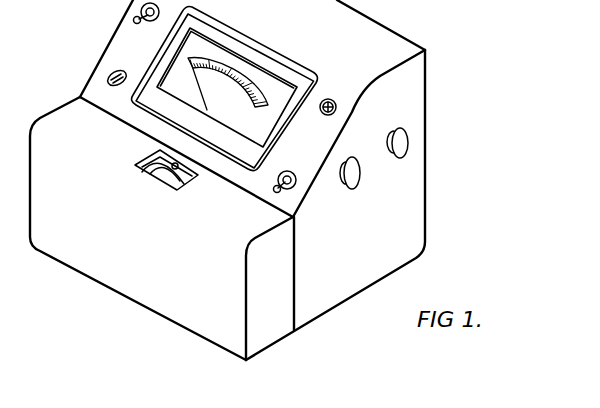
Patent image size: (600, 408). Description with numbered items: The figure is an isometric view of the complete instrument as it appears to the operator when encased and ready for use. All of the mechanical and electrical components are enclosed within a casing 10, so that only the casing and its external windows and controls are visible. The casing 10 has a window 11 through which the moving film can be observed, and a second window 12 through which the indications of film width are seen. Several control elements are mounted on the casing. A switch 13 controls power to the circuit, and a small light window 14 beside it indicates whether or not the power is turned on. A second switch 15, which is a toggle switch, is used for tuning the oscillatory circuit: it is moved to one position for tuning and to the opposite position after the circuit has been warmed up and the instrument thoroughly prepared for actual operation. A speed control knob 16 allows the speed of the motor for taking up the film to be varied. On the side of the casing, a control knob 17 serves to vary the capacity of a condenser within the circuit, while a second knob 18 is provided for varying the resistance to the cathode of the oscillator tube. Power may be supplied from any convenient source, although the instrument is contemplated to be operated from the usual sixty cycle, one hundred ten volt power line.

The casing 10 is at (402, 213).
The window 11 is at (179, 189).
The second window 12 is at (277, 90).
The switch 13 is at (290, 190).
The light window 14 is at (335, 100).
The second switch 15 is at (138, 15).
The speed control knob 16 is at (108, 80).
The control knob 17 is at (354, 182).
The second knob 18 is at (402, 143).